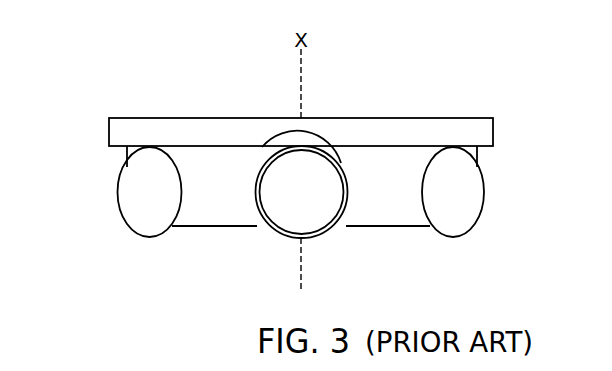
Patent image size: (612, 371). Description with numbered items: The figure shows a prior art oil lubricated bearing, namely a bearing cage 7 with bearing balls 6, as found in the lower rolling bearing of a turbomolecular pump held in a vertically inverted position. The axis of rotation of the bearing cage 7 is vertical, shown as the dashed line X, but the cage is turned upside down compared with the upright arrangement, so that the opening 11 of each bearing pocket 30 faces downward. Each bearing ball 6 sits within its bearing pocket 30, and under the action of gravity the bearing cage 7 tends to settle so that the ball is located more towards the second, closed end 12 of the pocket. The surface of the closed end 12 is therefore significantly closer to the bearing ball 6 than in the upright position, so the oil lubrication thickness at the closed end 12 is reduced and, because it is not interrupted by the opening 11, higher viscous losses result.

The bearing ball 6 is at (310, 210).
The bearing cage 7 is at (432, 128).
The opening 11 is at (267, 229).
The closed end 12 is at (298, 148).
The bearing pocket 30 is at (340, 168).